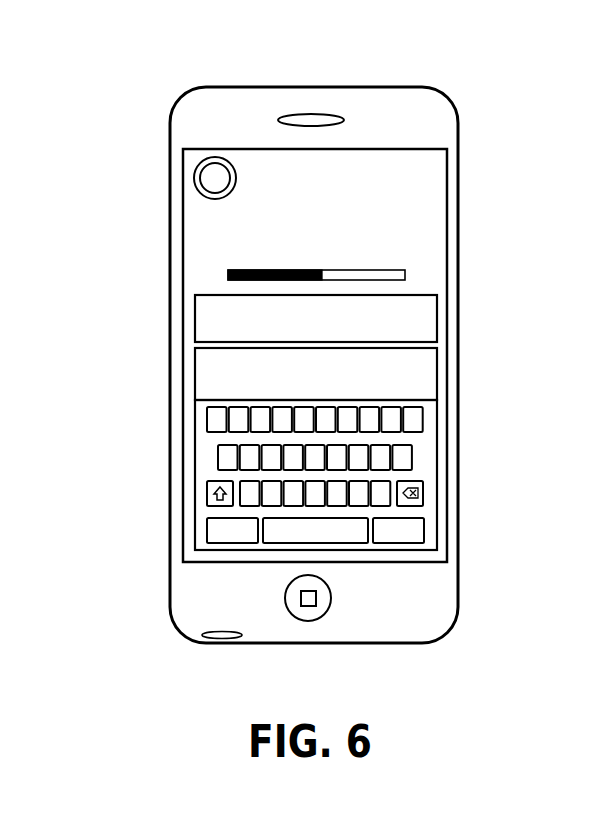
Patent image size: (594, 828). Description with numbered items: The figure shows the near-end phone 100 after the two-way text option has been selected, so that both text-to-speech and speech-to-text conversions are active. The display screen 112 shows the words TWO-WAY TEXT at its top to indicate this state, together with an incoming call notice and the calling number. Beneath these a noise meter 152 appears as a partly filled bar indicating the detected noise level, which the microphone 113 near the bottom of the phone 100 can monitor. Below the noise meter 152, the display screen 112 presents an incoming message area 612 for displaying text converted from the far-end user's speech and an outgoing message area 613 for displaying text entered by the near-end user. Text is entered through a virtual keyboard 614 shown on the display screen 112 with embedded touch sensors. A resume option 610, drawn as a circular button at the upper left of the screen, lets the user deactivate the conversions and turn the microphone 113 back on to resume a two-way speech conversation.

The near-end phone 100 is at (397, 86).
The display screen 112 is at (428, 213).
The microphone 113 is at (212, 636).
The noise meter 152 is at (405, 267).
The resume option 610 is at (208, 173).
The incoming message area 612 is at (430, 322).
The outgoing message area 613 is at (430, 373).
The virtual keyboard 614 is at (428, 462).